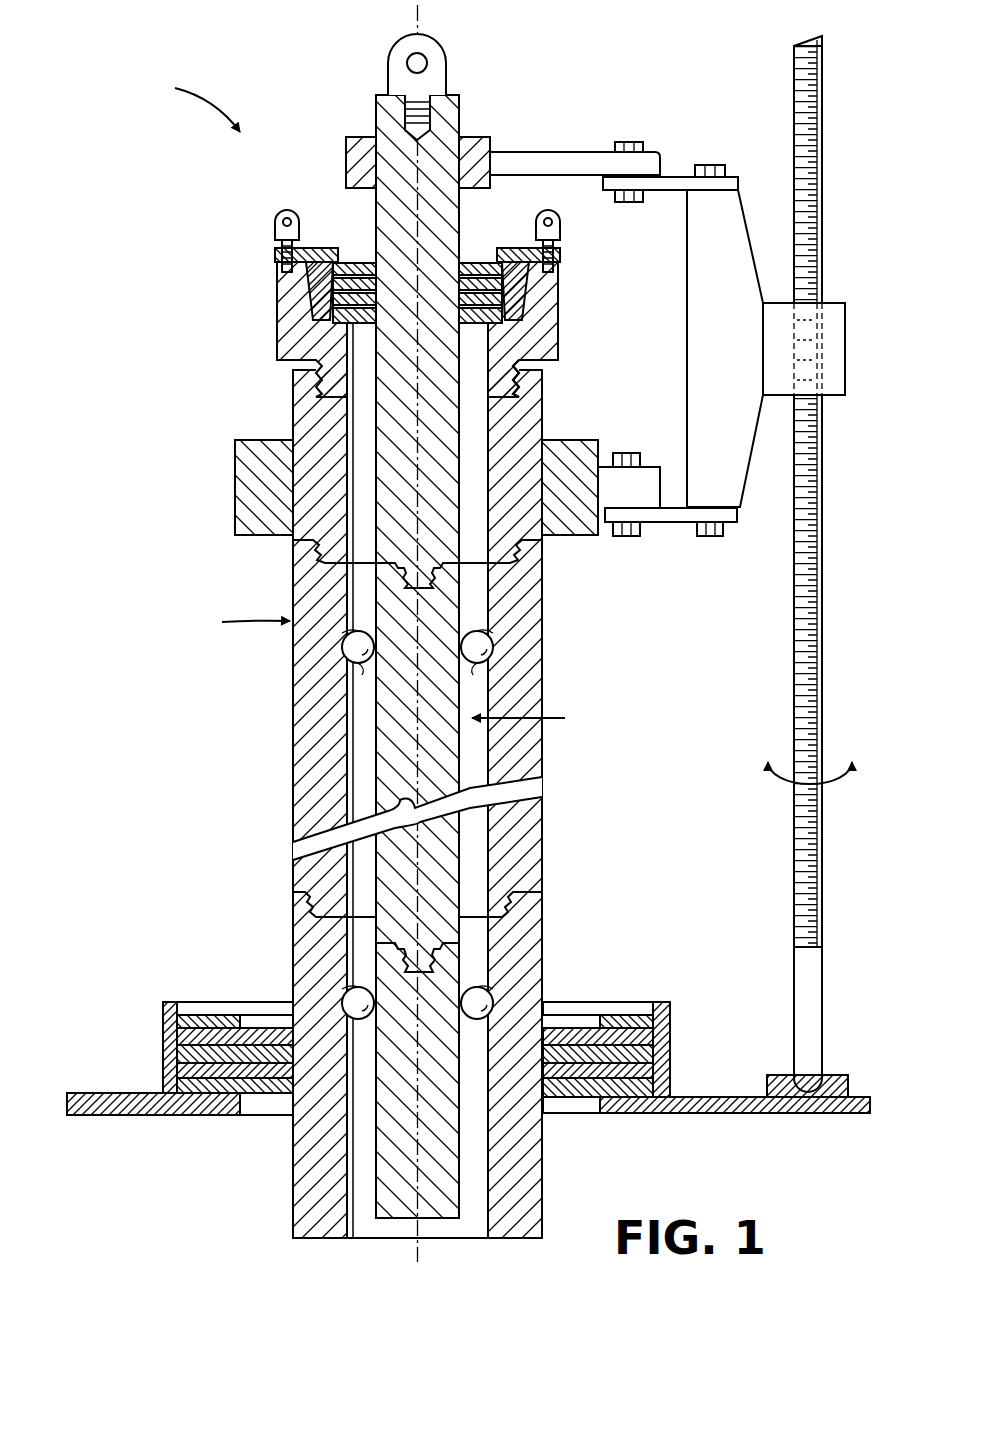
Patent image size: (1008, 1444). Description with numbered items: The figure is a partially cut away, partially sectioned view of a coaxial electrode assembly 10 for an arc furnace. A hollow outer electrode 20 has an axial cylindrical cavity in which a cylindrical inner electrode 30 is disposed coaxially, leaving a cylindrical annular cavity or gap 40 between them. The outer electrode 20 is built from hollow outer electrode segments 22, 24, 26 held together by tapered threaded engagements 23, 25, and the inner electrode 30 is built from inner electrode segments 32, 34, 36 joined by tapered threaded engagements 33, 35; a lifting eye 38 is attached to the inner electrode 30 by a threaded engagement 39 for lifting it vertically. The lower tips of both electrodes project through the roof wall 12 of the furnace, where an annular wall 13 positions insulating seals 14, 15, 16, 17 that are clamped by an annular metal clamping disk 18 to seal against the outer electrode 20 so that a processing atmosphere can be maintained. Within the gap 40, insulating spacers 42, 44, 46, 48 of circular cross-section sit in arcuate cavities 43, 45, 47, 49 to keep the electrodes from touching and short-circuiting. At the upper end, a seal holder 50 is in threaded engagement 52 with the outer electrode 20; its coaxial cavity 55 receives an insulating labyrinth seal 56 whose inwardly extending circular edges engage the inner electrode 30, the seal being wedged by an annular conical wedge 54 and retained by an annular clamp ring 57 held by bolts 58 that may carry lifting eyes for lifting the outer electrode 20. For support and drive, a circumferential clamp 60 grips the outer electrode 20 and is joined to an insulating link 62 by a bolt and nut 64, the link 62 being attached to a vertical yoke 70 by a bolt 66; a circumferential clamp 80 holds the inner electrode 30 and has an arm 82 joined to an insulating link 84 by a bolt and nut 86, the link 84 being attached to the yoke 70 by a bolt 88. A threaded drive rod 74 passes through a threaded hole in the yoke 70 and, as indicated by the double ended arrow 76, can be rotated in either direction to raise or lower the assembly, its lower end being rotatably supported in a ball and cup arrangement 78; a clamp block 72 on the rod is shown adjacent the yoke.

The electrode assembly 10 is at (167, 87).
The roof wall 12 is at (152, 1115).
The annular wall 13 is at (165, 1003).
The insulating seal 14 is at (178, 1010).
The insulating seal 15 is at (655, 1053).
The insulating seal 16 is at (178, 1060).
The insulating seal 17 is at (577, 1100).
The annular metal clamping disk 18 is at (628, 1010).
The hollow outer electrode 20 is at (186, 639).
The outer electrode segment 22 is at (293, 415).
The threaded engagement 23 is at (320, 556).
The outer electrode segment 24 is at (293, 785).
The threaded engagement 25 is at (312, 905).
The outer electrode segment 26 is at (293, 1162).
The inner electrode 30 is at (576, 732).
The inner electrode segment 32 is at (376, 122).
The threaded engagement 33 is at (405, 580).
The inner electrode segment 34 is at (490, 828).
The threaded engagement 35 is at (400, 960).
The inner electrode segment 36 is at (470, 1218).
The lifting eye 38 is at (447, 62).
The threaded engagement 39 is at (460, 98).
The cylindrical annular cavity 40 is at (362, 1215).
The insulating spacer 42 is at (355, 667).
The arcuate cavity 43 is at (342, 650).
The insulating spacer 44 is at (480, 667).
The arcuate cavity 45 is at (495, 650).
The insulating spacer 46 is at (343, 1000).
The arcuate cavity 47 is at (345, 1003).
The insulating spacer 48 is at (492, 1000).
The arcuate cavity 49 is at (490, 1005).
The seal holder 50 is at (277, 340).
The threaded engagement 52 is at (543, 375).
The annular conical wedge 54 is at (535, 296).
The coaxial cavity 55 is at (318, 300).
The labyrinth seal 56 is at (350, 265).
The annular clamp ring 57 is at (282, 262).
The bolts 58 is at (280, 240).
The circumferential clamp 60 is at (235, 470).
The insulating link 62 is at (677, 522).
The bolt and nut 64 is at (633, 536).
The bolt 66 is at (715, 536).
The yoke 70 is at (686, 320).
The clamp block 72 is at (830, 360).
The threaded drive rod 74 is at (795, 650).
The double ended arrow 76 is at (775, 792).
The ball and cup arrangement 78 is at (830, 1075).
The circumferential clamp 80 is at (346, 150).
The arm 82 is at (578, 152).
The insulating link 84 is at (660, 195).
The bolt and nut 86 is at (638, 142).
The bolt 88 is at (712, 165).